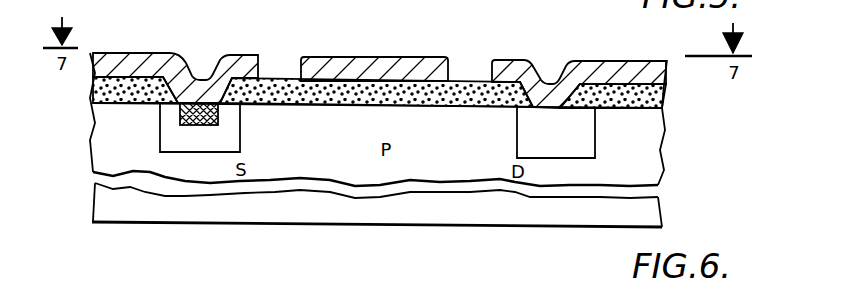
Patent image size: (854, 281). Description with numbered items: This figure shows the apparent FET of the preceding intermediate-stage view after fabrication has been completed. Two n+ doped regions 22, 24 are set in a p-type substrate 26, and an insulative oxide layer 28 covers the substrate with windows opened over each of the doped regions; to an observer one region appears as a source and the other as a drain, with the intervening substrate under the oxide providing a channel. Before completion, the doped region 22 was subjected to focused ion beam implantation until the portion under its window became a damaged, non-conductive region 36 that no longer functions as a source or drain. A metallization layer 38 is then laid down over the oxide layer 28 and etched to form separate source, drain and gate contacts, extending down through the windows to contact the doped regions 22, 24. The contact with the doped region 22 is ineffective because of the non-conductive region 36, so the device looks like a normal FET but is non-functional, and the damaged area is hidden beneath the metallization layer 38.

The n+ doped region 22 is at (240, 138).
The n+ doped region 24 is at (517, 137).
The p-type substrate 26 is at (656, 168).
The insulative oxide layer 28 is at (465, 80).
The damaged region 36 is at (219, 112).
The metallization layer 38 is at (151, 54).